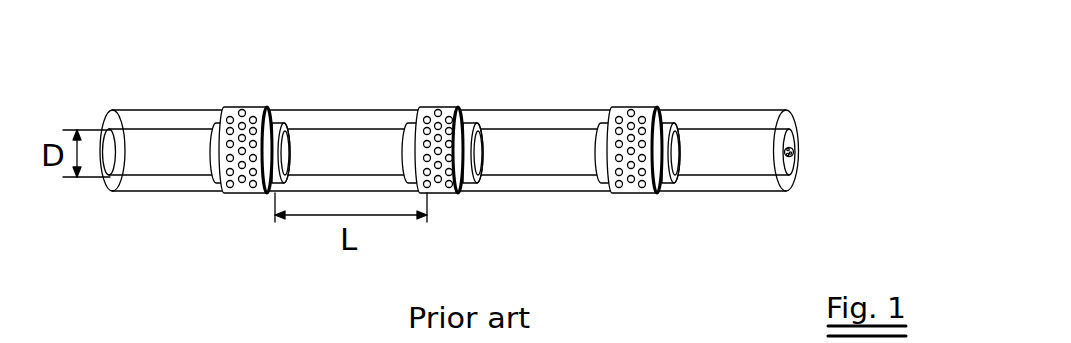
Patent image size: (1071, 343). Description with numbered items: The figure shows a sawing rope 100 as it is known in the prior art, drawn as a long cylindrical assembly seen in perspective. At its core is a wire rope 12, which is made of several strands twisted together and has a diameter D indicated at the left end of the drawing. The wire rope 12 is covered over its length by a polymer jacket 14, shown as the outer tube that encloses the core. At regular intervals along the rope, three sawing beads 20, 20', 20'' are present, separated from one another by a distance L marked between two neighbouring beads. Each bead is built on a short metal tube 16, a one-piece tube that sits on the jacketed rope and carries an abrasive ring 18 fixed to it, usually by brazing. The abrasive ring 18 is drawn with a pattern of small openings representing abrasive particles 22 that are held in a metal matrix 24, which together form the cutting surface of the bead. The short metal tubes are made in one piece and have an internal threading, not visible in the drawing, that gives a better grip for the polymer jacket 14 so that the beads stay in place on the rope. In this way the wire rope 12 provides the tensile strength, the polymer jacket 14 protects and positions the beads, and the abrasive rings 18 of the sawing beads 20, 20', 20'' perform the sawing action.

The sawing rope 100 is at (507, 120).
The wire rope 12 is at (790, 143).
The polymer jacket 14 is at (472, 174).
The short metal tube 16 is at (189, 182).
The abrasive ring 18 is at (485, 116).
The sawing bead 20 is at (420, 119).
The sawing bead 20' is at (640, 140).
The sawing bead 20'' is at (280, 115).
The abrasive particles 22 is at (602, 176).
The metal matrix 24 is at (492, 101).